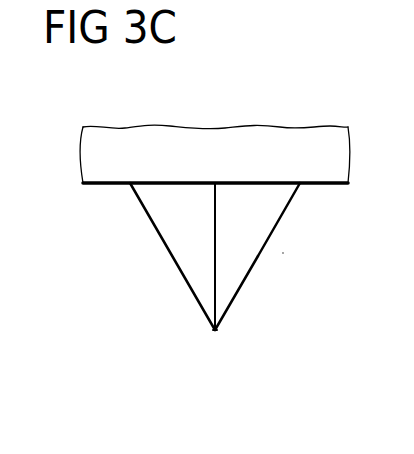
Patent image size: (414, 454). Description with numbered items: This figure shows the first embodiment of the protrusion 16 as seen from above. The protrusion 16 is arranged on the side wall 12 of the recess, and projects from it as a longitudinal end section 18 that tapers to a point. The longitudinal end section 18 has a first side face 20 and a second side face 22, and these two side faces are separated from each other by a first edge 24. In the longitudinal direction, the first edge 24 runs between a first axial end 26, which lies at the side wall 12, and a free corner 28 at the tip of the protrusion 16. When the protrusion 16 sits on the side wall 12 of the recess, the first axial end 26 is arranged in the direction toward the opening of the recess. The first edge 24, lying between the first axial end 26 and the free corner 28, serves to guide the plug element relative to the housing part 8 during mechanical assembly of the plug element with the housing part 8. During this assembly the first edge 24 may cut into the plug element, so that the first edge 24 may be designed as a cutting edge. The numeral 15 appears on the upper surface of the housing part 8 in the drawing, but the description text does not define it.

The housing part 8 is at (148, 138).
The top surface 15 is at (310, 138).
The side wall 12 is at (112, 192).
The first axial end 26 is at (217, 180).
The first side face 20 is at (170, 222).
The longitudinal end section 18 is at (287, 212).
The second side face 22 is at (232, 282).
The first edge 24 is at (213, 255).
The protrusion 16 is at (295, 256).
The free corner 28 is at (215, 338).